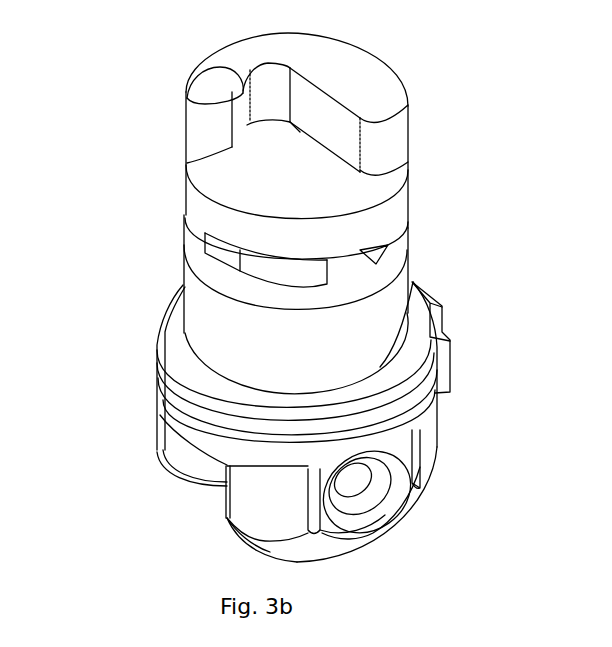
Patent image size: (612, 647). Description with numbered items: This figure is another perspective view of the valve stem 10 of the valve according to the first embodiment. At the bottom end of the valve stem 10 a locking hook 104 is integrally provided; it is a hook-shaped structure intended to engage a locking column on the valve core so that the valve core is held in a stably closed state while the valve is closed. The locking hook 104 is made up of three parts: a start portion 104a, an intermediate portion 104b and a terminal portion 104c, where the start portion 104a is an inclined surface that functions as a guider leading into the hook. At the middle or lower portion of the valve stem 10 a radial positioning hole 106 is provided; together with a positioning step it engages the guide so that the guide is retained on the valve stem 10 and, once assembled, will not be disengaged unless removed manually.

The valve stem 10 is at (143, 300).
The locking hook 104 is at (378, 107).
The start portion 104a is at (212, 134).
The intermediate portion 104b is at (186, 91).
The terminal portion 104c is at (268, 78).
The radial positioning hole 106 is at (350, 268).